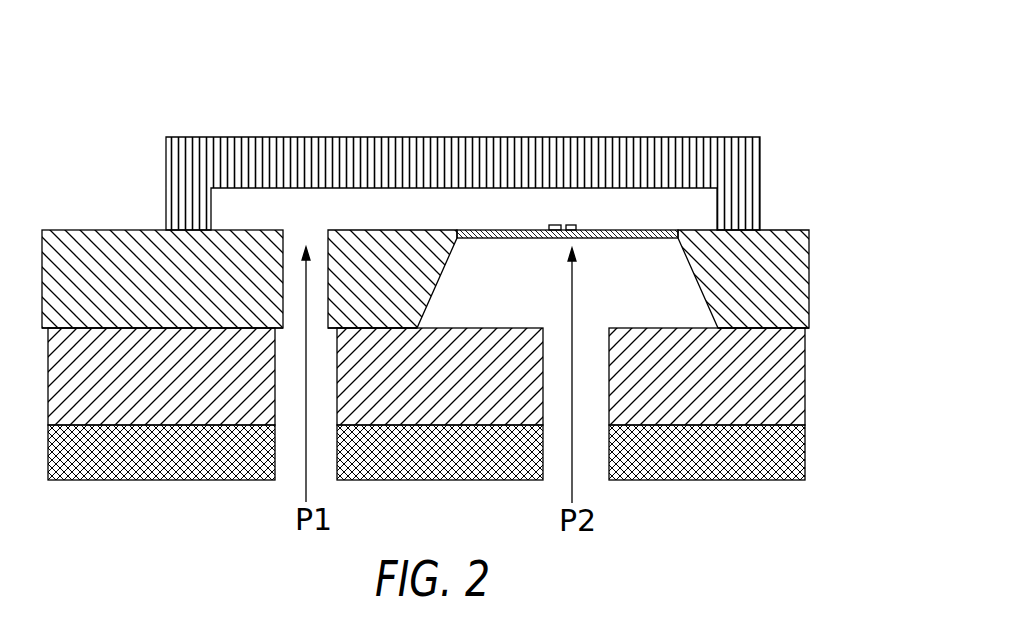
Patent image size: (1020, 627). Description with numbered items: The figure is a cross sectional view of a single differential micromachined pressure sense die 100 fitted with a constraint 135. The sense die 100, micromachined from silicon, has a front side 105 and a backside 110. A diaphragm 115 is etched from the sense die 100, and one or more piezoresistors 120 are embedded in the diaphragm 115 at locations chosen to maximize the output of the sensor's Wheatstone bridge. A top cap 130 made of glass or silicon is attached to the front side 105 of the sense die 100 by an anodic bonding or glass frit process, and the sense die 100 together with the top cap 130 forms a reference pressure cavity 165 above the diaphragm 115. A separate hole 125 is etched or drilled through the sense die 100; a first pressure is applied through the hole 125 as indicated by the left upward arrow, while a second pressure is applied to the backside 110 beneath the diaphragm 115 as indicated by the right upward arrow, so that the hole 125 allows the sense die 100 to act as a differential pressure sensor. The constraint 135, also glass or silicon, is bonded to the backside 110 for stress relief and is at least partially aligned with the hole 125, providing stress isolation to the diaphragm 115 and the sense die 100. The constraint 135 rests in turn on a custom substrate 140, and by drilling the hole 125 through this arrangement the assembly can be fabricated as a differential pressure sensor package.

The pressure sense die 100 is at (766, 71).
The front side 105 is at (793, 231).
The backside 110 is at (807, 328).
The diaphragm 115 is at (478, 243).
The piezoresistors 120 is at (575, 224).
The hole 125 is at (327, 482).
The top cap 130 is at (430, 143).
The constraint 135 is at (790, 383).
The substrate 140 is at (792, 457).
The reference pressure cavity 165 is at (518, 207).